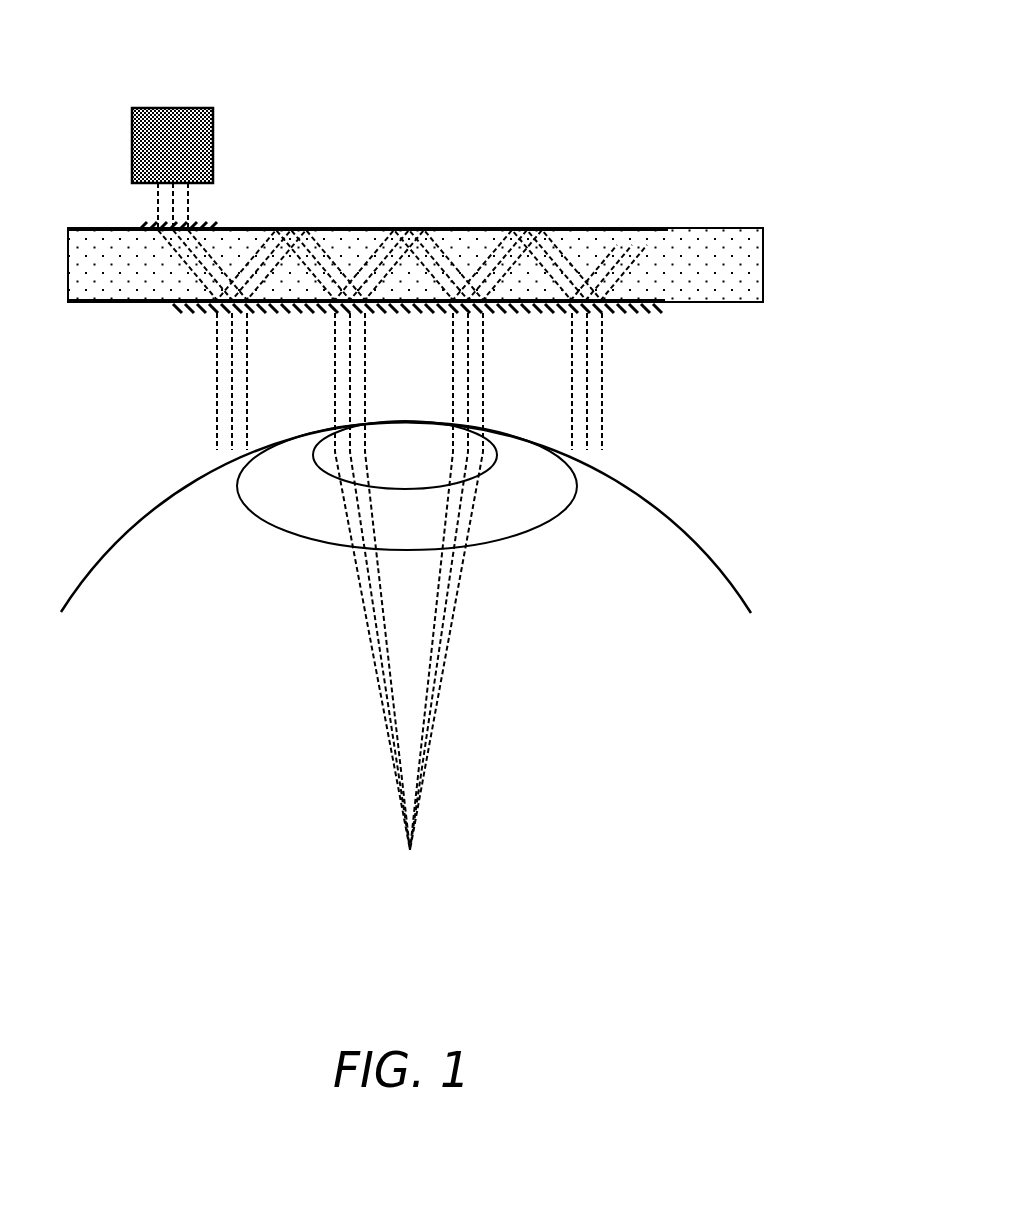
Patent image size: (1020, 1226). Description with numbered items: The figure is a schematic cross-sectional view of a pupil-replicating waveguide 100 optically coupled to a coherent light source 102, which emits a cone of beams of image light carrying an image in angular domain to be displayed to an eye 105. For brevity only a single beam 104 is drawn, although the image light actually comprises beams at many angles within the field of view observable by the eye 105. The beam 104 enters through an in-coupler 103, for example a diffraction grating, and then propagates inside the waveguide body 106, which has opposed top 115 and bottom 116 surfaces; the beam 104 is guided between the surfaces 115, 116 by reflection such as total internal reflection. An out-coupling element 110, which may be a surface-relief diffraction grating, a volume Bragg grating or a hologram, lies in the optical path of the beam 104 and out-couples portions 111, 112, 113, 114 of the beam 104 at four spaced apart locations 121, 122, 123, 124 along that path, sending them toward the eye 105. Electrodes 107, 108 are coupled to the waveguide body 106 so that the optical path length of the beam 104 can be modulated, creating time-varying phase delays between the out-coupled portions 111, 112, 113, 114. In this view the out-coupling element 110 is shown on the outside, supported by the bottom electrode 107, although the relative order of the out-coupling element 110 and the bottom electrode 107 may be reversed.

The pupil-replicating waveguide 100 is at (470, 145).
The coherent light source 102 is at (166, 108).
The in-coupler 103 is at (205, 225).
The beam 104 is at (158, 202).
The eye 105 is at (688, 572).
The waveguide body 106 is at (764, 262).
The bottom electrode 107 is at (85, 303).
The electrode 108 is at (575, 228).
The out-coupling element 110 is at (646, 313).
The portion of the beam 111 is at (232, 412).
The portion of the beam 112 is at (355, 382).
The portion of the beam 113 is at (472, 400).
The portion of the beam 114 is at (585, 401).
The top surface 115 is at (720, 228).
The bottom surface 116 is at (730, 303).
The location 121 is at (218, 319).
The location 122 is at (343, 317).
The location 123 is at (464, 317).
The location 124 is at (578, 317).